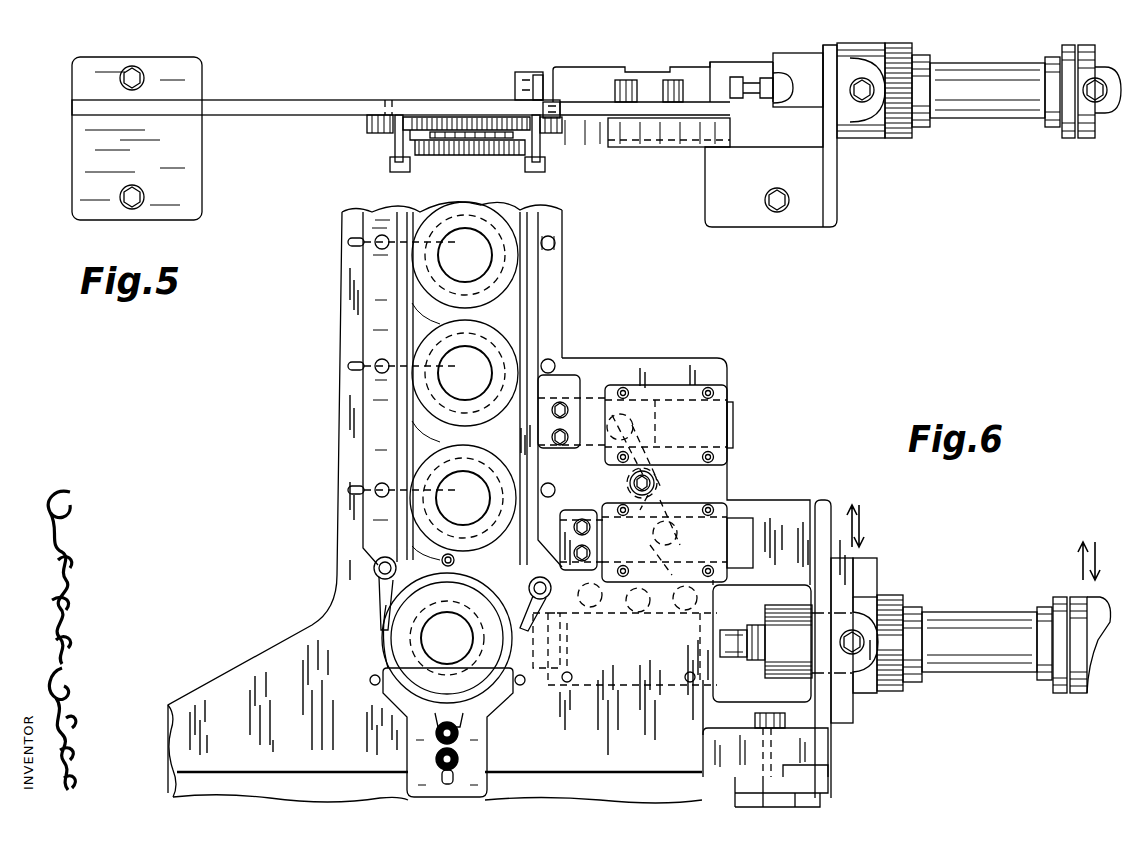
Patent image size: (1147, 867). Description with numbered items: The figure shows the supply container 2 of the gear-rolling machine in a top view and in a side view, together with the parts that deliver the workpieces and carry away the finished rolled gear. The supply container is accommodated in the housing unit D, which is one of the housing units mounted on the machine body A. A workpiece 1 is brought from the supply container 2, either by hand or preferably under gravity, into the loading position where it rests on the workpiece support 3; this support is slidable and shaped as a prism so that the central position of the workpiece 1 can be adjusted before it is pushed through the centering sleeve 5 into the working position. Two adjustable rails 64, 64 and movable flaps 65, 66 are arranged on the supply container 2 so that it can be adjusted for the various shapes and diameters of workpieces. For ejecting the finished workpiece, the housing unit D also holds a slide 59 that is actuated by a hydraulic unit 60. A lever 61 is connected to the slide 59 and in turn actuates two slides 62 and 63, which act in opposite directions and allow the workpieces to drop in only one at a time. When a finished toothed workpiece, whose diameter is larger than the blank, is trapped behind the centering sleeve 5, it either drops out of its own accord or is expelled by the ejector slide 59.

In FIG. 5, the workpiece 1 is at (421, 116).
In FIG. 6, the workpiece 1 is at (437, 332).
In FIG. 5, the supply container 2 is at (356, 108).
In FIG. 6, the workpiece support 3 is at (397, 703).
In FIG. 6, the centering sleeve 5 is at (384, 660).
In FIG. 5, the slide 59 is at (517, 78).
In FIG. 6, the slide 59 is at (531, 670).
In FIG. 5, the hydraulic unit 60 is at (990, 108).
In FIG. 6, the hydraulic unit 60 is at (975, 618).
In FIG. 6, the lever 61 is at (672, 511).
In FIG. 6, the slide 62 is at (566, 526).
In FIG. 6, the slide 63 is at (570, 378).
In FIG. 5, the adjustable rail 64 is at (397, 145).
In FIG. 6, the adjustable rail 64 is at (540, 222).
In FIG. 6, the movable flap 65 is at (382, 603).
In FIG. 6, the movable flap 66 is at (527, 621).
In FIG. 6, the machine body A is at (823, 800).
In FIG. 5, the housing unit D is at (800, 227).
In FIG. 6, the housing unit D is at (803, 508).